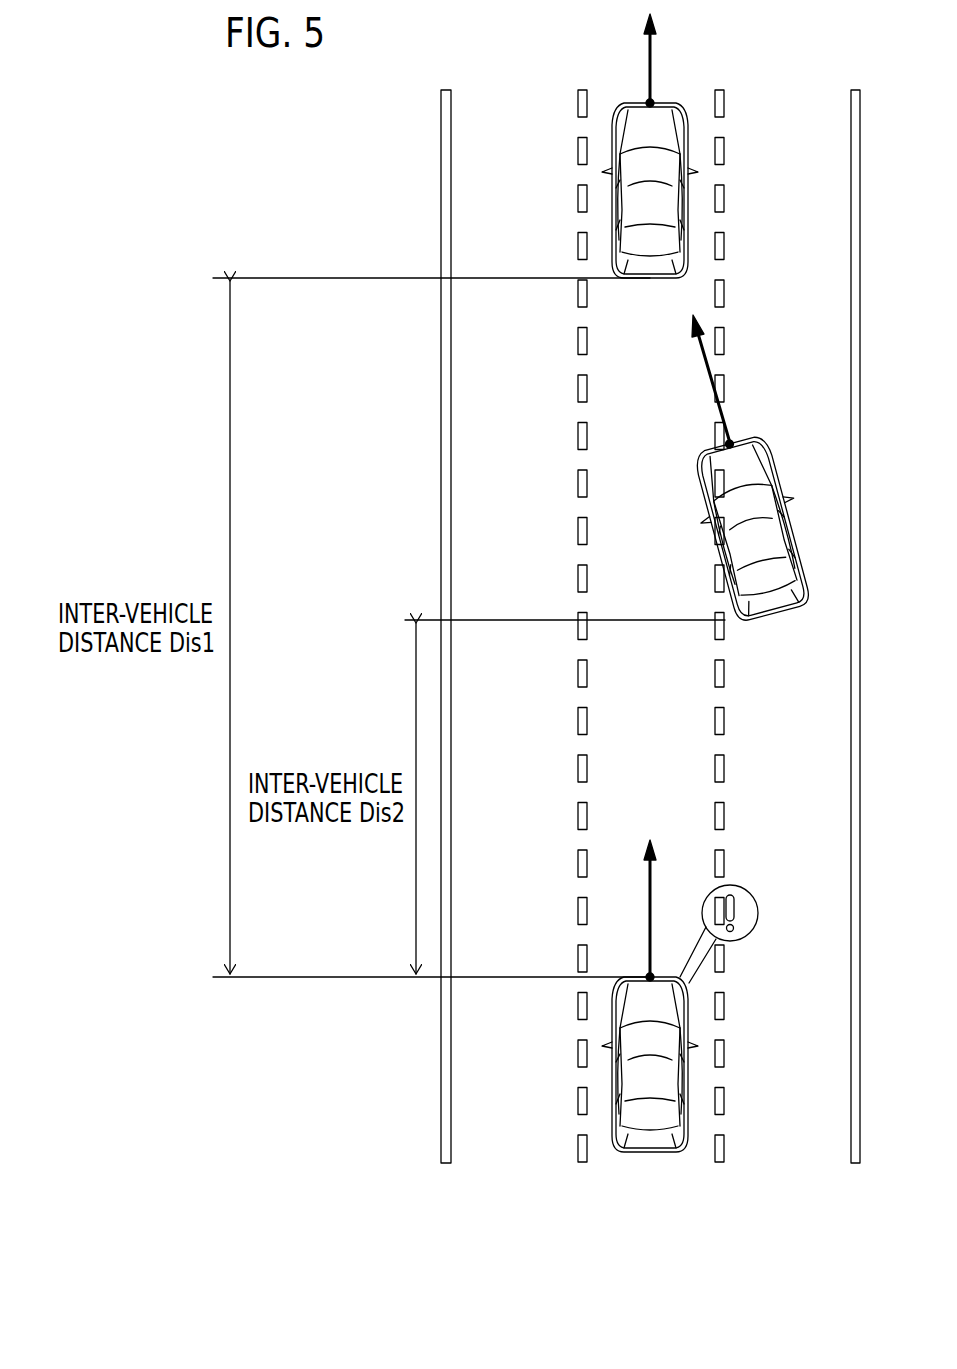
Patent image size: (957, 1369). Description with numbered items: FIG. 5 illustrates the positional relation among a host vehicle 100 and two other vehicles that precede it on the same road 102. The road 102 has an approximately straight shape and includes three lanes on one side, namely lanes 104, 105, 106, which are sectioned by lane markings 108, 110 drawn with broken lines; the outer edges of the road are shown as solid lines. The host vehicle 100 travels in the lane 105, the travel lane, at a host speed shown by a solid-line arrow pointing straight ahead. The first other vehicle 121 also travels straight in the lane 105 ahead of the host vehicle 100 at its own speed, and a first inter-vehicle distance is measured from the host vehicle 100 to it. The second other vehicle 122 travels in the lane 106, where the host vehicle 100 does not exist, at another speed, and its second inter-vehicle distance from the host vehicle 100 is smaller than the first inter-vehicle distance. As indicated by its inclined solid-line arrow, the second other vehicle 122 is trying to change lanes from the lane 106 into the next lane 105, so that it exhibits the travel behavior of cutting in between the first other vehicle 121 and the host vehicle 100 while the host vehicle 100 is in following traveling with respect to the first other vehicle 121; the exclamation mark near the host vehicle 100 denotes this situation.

The host vehicle 100 is at (690, 1040).
The road 102 is at (805, 1243).
The lane 104 is at (529, 1152).
The lane 105 is at (679, 1157).
The lane 106 is at (785, 1152).
The lane marking 108 is at (607, 1172).
The lane marking 110 is at (742, 1172).
The first other vehicle 121 is at (688, 183).
The second other vehicle 122 is at (757, 443).